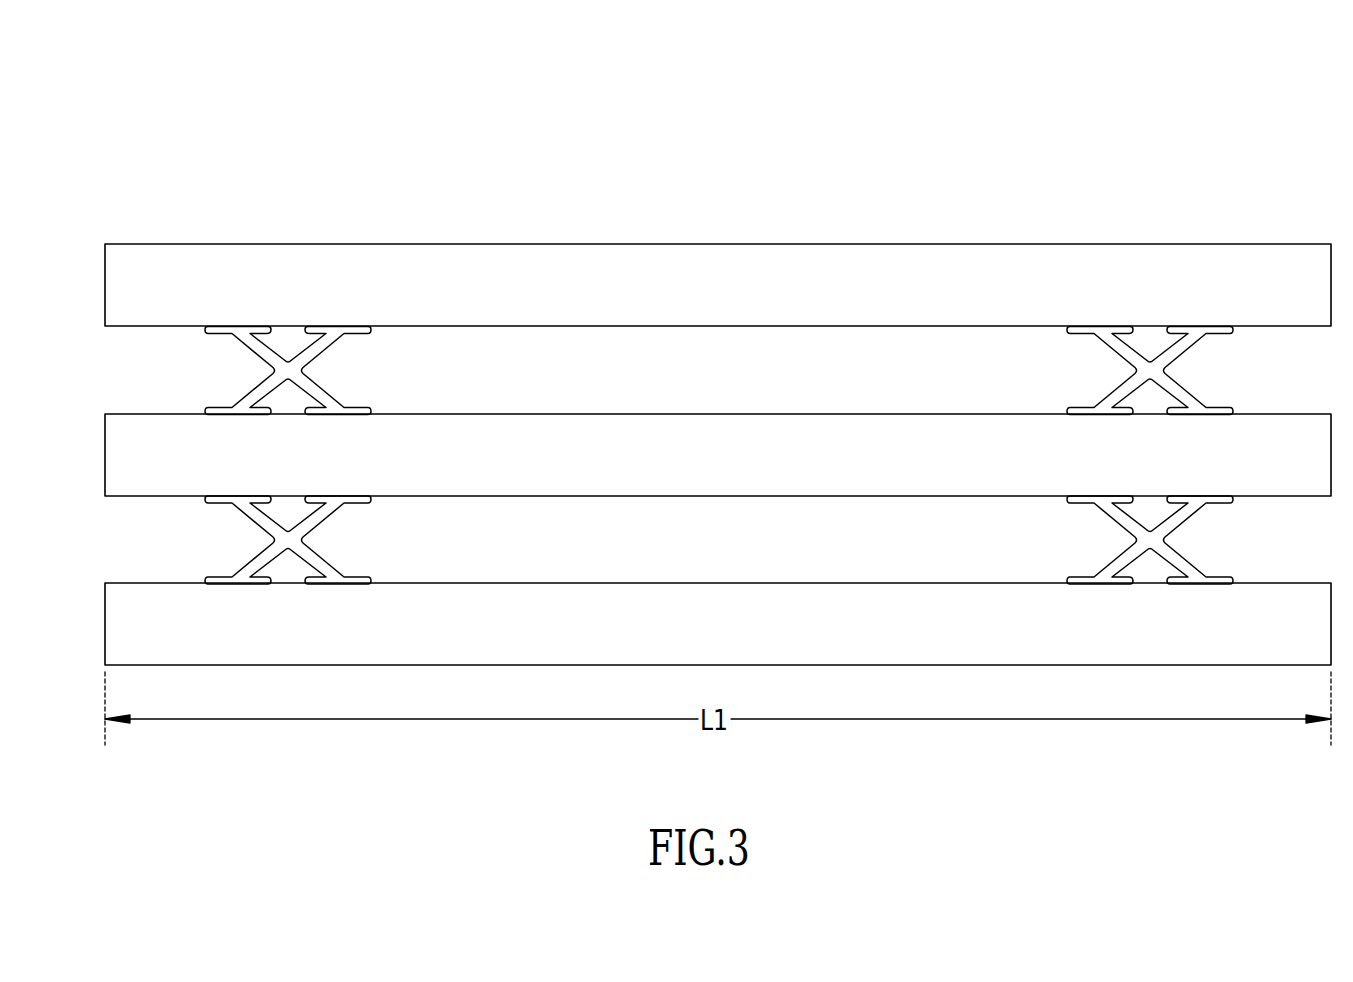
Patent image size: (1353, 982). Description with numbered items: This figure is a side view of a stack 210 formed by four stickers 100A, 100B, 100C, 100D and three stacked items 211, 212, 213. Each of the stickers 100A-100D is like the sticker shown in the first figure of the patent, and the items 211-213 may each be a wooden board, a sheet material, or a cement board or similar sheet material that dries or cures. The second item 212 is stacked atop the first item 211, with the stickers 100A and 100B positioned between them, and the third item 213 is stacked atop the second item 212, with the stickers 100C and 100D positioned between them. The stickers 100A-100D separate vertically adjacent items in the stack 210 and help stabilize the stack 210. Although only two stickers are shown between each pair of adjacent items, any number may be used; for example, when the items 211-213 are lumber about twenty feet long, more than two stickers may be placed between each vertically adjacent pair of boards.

The stack 210 is at (1098, 130).
The first item 211 is at (735, 609).
The second item 212 is at (735, 440).
The third item 213 is at (735, 270).
The sticker 100A is at (320, 518).
The sticker 100B is at (1183, 518).
The sticker 100C is at (320, 348).
The sticker 100D is at (1183, 349).